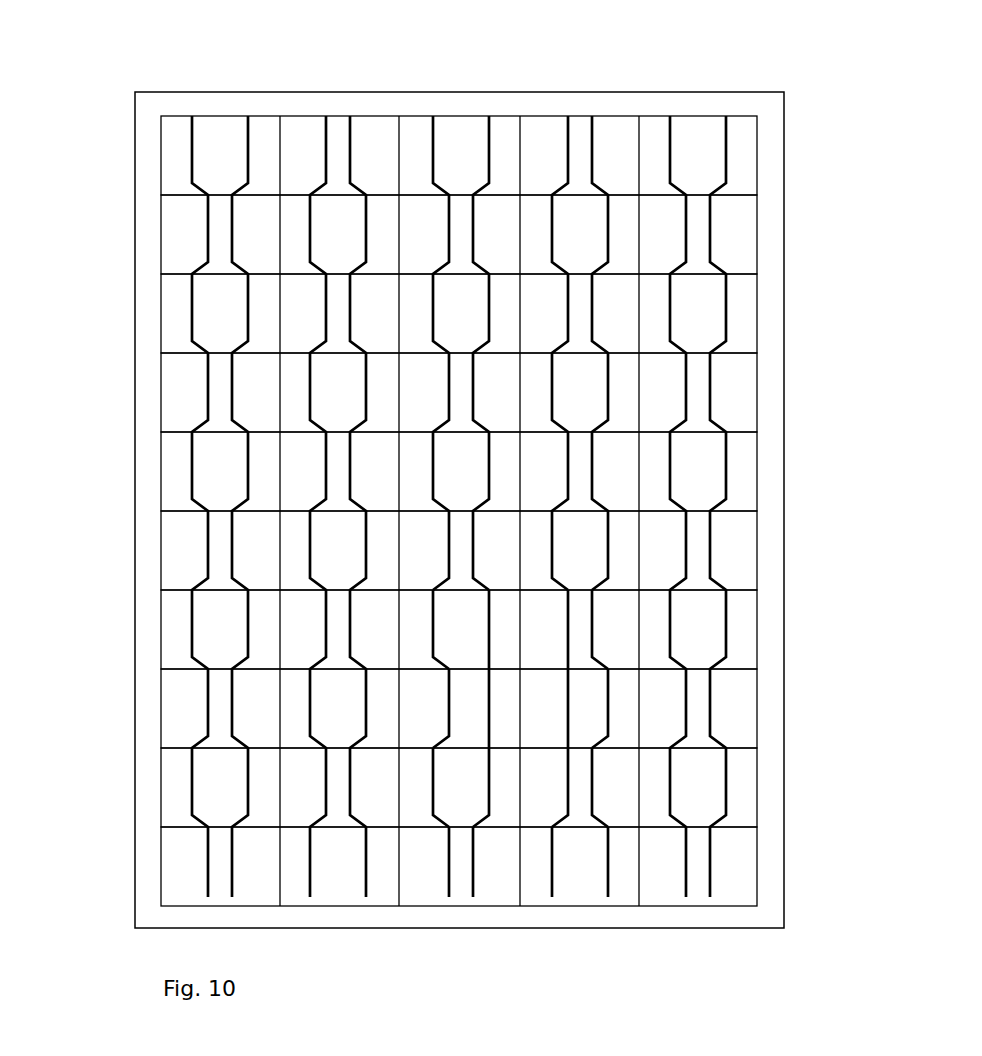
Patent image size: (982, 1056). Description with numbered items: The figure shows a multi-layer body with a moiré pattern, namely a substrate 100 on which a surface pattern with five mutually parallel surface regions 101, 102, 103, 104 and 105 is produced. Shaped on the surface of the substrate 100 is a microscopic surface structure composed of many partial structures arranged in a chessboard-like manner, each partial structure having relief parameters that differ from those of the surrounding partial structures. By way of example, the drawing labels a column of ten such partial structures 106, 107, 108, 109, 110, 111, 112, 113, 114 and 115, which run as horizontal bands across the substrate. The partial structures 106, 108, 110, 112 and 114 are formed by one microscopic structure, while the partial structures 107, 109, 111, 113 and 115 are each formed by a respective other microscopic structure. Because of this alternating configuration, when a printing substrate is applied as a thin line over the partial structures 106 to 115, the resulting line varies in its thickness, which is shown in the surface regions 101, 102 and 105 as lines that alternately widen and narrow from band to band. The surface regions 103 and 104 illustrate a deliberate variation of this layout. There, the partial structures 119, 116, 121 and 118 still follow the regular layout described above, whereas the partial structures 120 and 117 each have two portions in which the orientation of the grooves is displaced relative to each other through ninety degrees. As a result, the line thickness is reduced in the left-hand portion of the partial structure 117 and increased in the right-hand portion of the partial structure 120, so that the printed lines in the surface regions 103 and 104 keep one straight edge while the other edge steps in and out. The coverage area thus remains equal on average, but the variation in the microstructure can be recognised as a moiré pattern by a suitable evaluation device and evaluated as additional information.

The substrate 100 is at (142, 358).
The surface region 101 is at (218, 130).
The surface region 102 is at (341, 130).
The surface region 103 is at (445, 454).
The surface region 104 is at (569, 454).
The surface region 105 is at (695, 130).
The partial structure 106 is at (744, 156).
The partial structure 107 is at (744, 234).
The partial structure 108 is at (744, 314).
The partial structure 109 is at (744, 392).
The partial structure 110 is at (744, 472).
The partial structure 111 is at (744, 550).
The partial structure 112 is at (744, 630).
The partial structure 113 is at (744, 708).
The partial structure 114 is at (744, 788).
The partial structure 115 is at (744, 866).
The partial structure 116 is at (569, 629).
The partial structure 117 is at (569, 708).
The partial structure 118 is at (569, 787).
The partial structure 119 is at (445, 629).
The partial structure 120 is at (445, 708).
The partial structure 121 is at (445, 787).